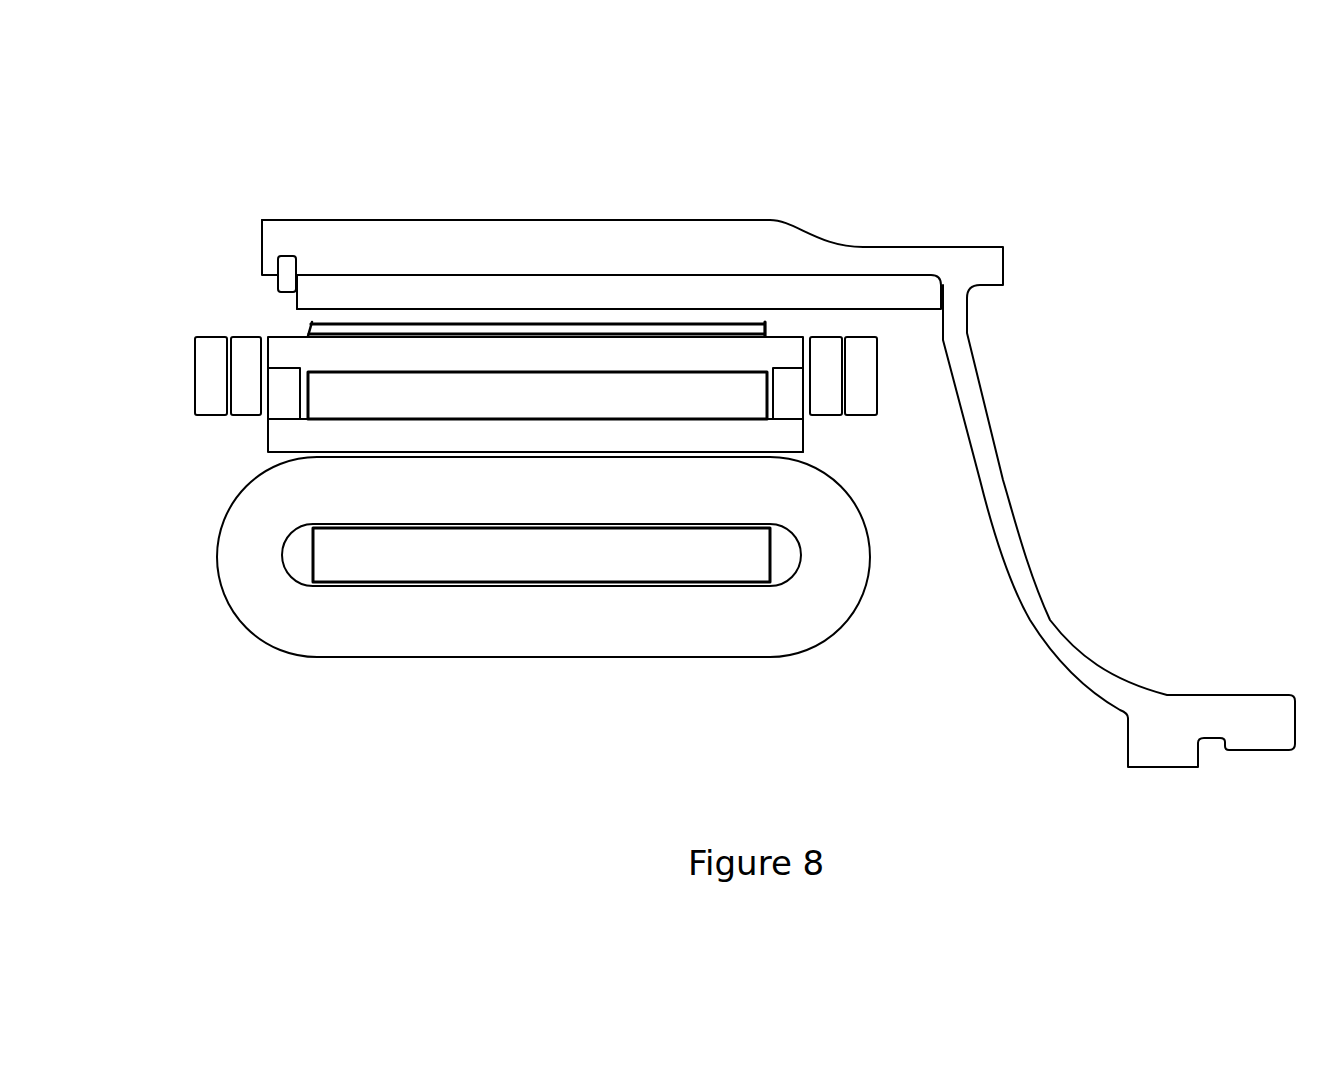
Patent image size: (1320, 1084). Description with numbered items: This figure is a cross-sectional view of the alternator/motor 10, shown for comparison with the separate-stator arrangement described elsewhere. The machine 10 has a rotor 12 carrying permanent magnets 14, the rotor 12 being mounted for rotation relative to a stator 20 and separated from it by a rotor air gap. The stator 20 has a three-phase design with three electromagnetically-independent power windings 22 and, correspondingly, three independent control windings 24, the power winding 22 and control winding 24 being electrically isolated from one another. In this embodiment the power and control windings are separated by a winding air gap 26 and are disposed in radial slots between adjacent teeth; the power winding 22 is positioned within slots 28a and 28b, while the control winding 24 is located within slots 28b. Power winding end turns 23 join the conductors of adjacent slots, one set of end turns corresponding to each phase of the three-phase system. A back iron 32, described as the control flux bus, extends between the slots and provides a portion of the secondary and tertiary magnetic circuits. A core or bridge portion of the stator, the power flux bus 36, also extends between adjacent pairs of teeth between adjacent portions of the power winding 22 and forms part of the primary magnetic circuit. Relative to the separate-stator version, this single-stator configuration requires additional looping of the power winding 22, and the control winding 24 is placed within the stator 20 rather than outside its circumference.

The alternator/motor 10 is at (1189, 225).
The rotor 12 is at (664, 245).
The permanent magnets 14 is at (892, 283).
The stator 20 is at (753, 318).
The power winding 22 is at (338, 440).
The power winding end turns 23 is at (274, 417).
The control winding 24 is at (390, 630).
The winding air gap 26 is at (747, 456).
The slots 28a is at (300, 331).
The slots 28b is at (320, 525).
The back iron 32 is at (492, 567).
The power flux bus 36 is at (490, 388).